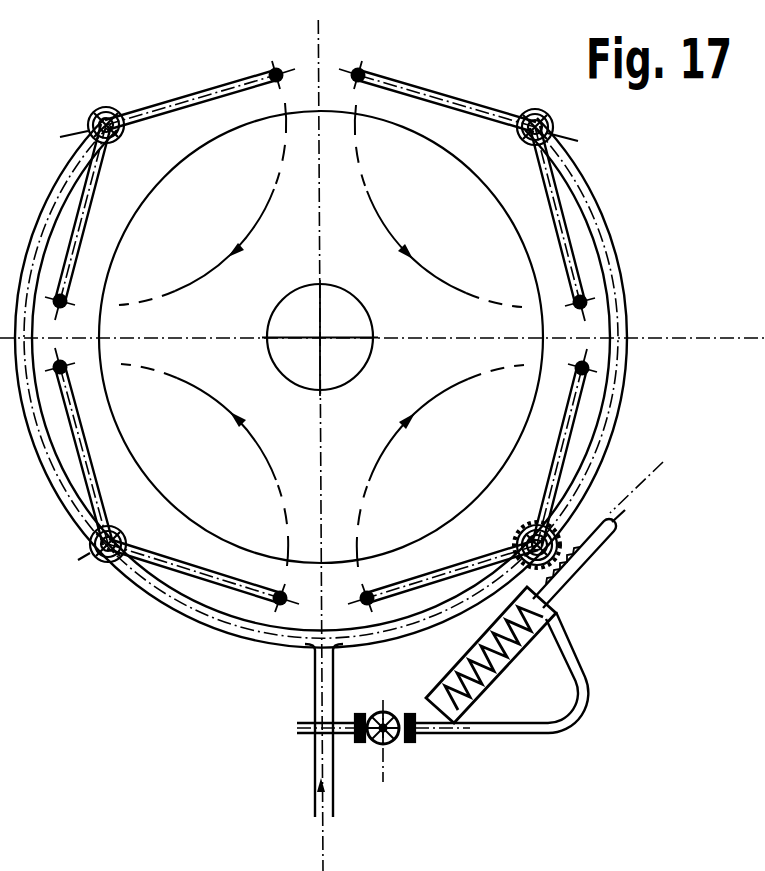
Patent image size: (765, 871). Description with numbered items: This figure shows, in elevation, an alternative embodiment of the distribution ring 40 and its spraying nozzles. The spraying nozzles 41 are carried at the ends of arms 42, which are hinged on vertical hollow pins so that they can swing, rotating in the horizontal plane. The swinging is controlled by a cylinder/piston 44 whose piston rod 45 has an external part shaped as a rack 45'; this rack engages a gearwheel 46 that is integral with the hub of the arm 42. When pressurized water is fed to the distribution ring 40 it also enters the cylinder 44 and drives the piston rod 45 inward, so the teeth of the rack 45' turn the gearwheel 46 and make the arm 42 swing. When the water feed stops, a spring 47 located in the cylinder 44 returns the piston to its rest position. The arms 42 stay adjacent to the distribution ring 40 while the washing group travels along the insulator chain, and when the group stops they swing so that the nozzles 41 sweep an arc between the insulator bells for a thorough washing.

The distribution ring 40 is at (52, 192).
The spraying nozzle 41 is at (280, 66).
The arm 42 is at (198, 93).
The cylinder/piston 44 is at (502, 668).
The piston rod 45 is at (576, 571).
The rack 45' is at (629, 476).
The gearwheel 46 is at (526, 522).
The spring 47 is at (482, 694).